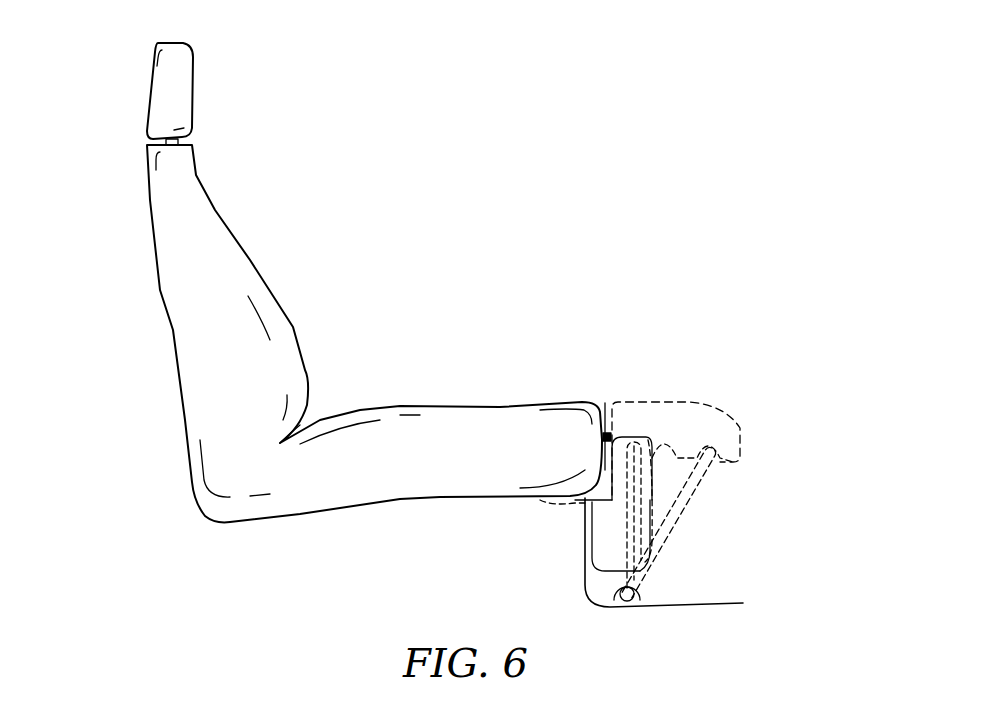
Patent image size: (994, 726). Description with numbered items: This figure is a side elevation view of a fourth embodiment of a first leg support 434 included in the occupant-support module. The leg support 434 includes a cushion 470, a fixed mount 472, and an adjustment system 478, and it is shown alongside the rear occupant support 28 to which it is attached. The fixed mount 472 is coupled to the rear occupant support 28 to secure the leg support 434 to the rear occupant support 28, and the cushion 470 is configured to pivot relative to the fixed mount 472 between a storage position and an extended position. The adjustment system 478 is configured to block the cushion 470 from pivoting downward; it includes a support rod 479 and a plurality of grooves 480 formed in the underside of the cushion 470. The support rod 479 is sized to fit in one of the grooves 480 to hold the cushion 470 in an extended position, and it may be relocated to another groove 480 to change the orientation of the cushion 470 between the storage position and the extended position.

The rear occupant support 28 is at (101, 174).
The leg support 434 is at (677, 361).
The cushion 470 is at (693, 404).
The fixed mount 472 is at (569, 502).
The adjustment system 478 is at (757, 556).
The support rod 479 is at (668, 535).
The grooves 480 is at (722, 476).